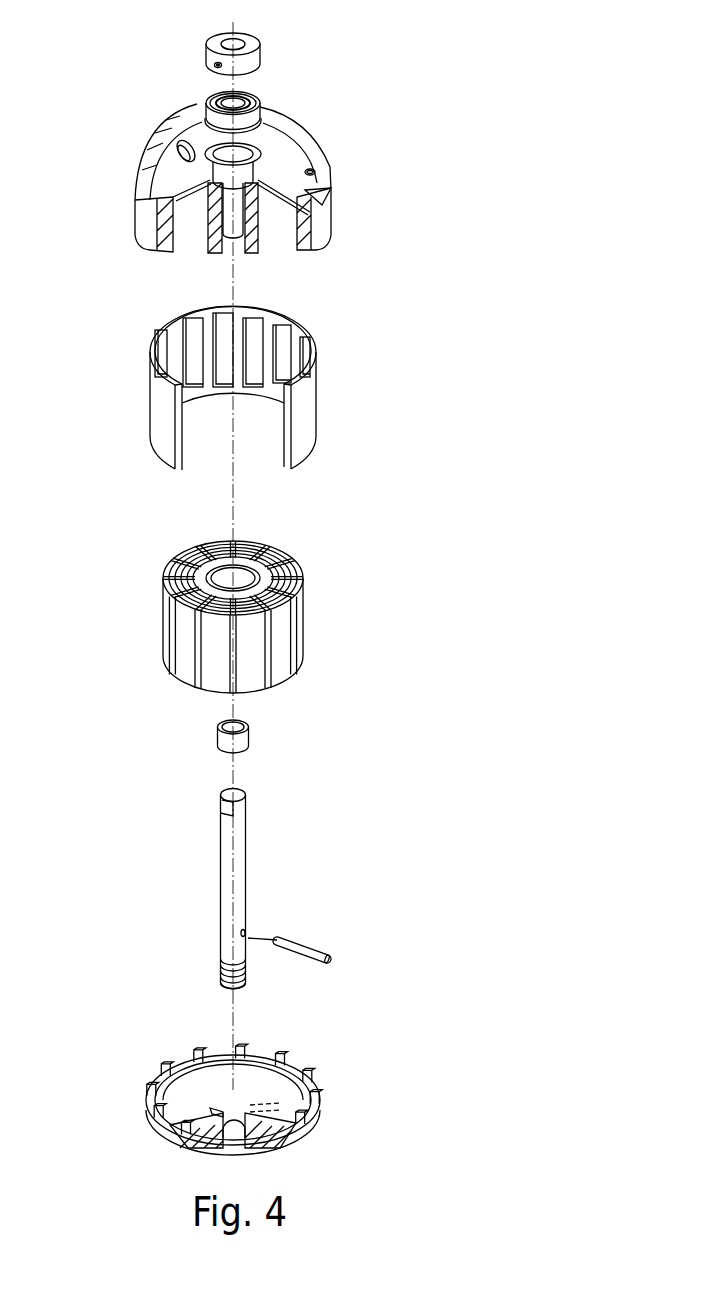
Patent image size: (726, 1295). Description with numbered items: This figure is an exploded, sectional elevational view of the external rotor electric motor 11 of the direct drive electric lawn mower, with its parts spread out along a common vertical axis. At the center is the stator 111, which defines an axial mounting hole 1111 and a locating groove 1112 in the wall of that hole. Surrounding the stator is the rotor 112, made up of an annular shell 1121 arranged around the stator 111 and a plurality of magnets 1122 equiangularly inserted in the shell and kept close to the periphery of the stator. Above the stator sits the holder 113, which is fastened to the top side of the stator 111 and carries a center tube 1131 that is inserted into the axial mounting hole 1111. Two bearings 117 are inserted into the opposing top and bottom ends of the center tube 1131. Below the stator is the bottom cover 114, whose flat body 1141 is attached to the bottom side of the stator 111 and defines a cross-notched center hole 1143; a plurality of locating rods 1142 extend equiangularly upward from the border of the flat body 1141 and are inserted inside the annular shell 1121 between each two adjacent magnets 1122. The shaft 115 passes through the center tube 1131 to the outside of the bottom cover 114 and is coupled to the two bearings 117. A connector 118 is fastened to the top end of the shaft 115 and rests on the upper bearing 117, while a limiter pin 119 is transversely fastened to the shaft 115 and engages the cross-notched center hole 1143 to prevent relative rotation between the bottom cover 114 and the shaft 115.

The external rotor electric motor 11 is at (395, 495).
The stator 111 is at (274, 603).
The axial mounting hole 1111 is at (225, 578).
The locating groove 1112 is at (252, 572).
The rotor 112 is at (285, 369).
The annular shell 1121 is at (305, 413).
The magnets 1122 is at (257, 332).
The holder 113 is at (278, 193).
The center tube 1131 is at (210, 220).
The bottom cover 114 is at (247, 1062).
The flat body 1141 is at (200, 1100).
The locating rods 1142 is at (207, 1043).
The cross-notched center hole 1143 is at (257, 1123).
The shaft 115 is at (235, 885).
The bearings 117 is at (205, 102).
The connector 118 is at (215, 45).
The limiter pin 119 is at (300, 948).